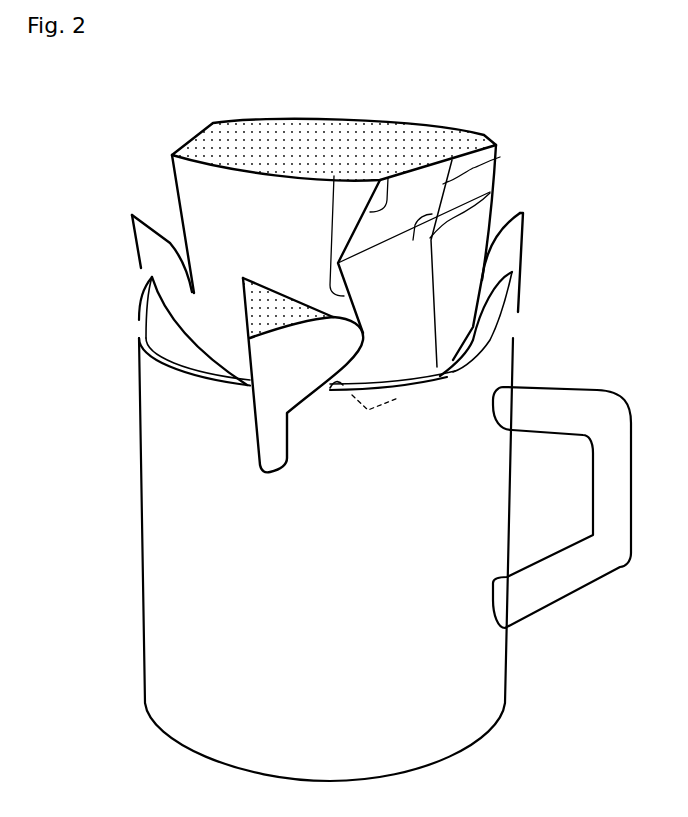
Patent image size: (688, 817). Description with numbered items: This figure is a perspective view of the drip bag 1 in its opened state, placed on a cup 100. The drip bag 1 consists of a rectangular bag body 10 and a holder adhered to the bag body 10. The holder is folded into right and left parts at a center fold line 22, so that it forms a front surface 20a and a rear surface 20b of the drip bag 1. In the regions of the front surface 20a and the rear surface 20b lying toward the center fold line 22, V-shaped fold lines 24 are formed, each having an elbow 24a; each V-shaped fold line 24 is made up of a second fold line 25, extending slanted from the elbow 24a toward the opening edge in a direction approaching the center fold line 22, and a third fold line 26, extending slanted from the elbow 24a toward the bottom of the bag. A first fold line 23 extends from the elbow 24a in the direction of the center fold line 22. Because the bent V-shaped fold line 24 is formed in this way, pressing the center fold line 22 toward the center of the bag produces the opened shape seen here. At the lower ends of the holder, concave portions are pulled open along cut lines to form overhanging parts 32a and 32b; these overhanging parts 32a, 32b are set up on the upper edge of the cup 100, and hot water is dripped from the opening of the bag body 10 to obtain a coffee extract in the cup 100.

The drip bag 1 is at (82, 120).
The bag body 10 is at (210, 148).
The front surface 20a is at (197, 185).
The rear surface 20b is at (300, 128).
The center fold line 22 is at (500, 157).
The first fold line 23 is at (490, 192).
The V-shaped fold line 24 is at (411, 70).
The elbow 24a is at (341, 262).
The second fold line 25 is at (388, 178).
The third fold line 26 is at (334, 176).
The overhanging part 32a is at (267, 422).
The overhanging part 32b is at (148, 250).
The cup 100 is at (143, 567).